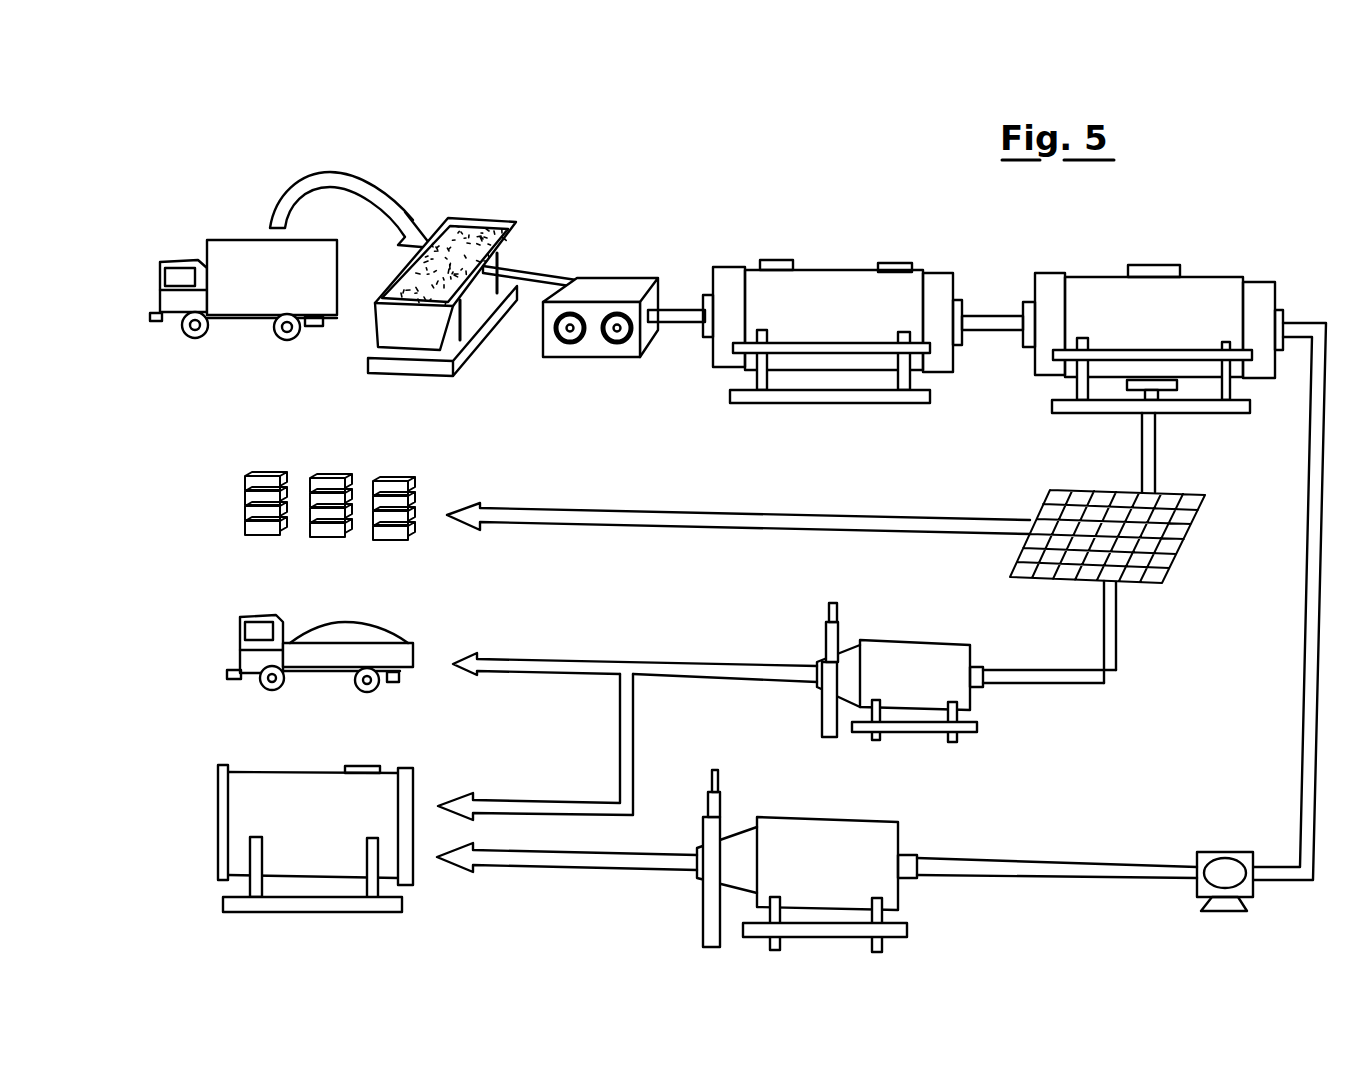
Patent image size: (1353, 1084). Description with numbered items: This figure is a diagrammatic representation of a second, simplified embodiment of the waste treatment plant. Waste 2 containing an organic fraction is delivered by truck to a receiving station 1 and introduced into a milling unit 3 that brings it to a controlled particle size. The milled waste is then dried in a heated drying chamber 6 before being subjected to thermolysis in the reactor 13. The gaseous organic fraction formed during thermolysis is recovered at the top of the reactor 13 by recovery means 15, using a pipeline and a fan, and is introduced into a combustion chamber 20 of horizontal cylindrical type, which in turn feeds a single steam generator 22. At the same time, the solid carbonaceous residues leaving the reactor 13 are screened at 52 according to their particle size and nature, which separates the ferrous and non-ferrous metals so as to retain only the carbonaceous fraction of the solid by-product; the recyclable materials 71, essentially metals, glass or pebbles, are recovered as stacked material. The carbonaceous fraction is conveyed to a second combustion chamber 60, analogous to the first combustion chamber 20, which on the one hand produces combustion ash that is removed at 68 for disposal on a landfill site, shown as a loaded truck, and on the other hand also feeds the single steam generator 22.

The receiving station 1 is at (417, 335).
The waste 2 is at (485, 230).
The milling unit 3 is at (627, 287).
The drying chamber 6 is at (848, 283).
The reactor 13 is at (1208, 293).
The means for recovering 15 is at (1212, 852).
The combustion chamber 20 is at (902, 895).
The steam generator 22 is at (237, 805).
The screening 52 is at (1180, 553).
The second combustion chamber 60 is at (975, 698).
The combustion ash removal 68 is at (247, 658).
The recyclable materials 71 is at (390, 477).